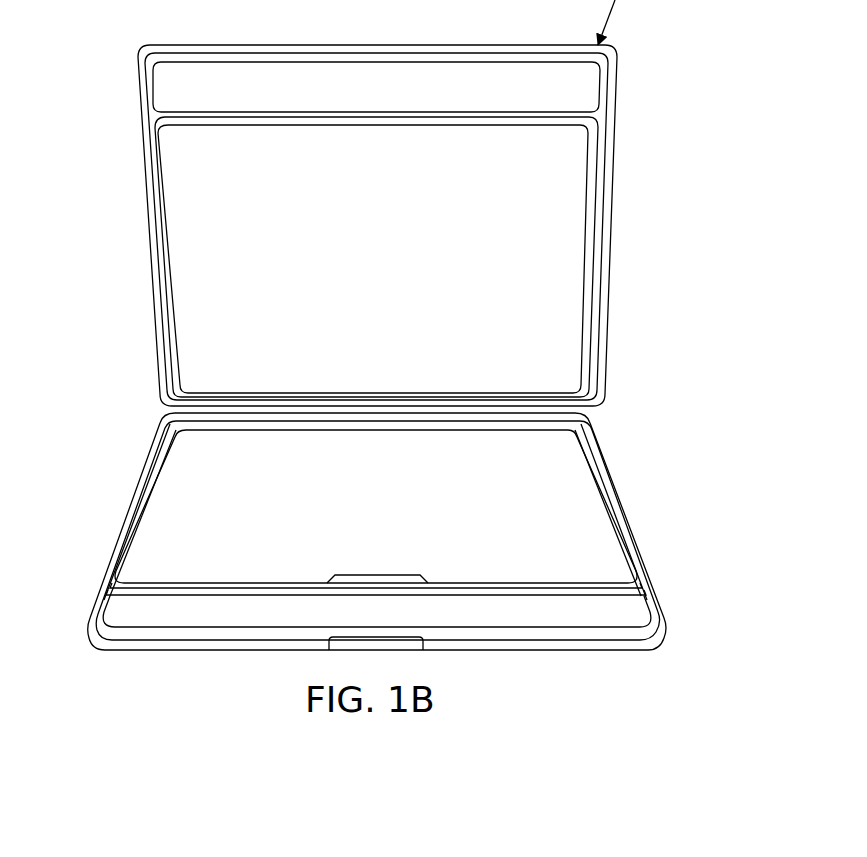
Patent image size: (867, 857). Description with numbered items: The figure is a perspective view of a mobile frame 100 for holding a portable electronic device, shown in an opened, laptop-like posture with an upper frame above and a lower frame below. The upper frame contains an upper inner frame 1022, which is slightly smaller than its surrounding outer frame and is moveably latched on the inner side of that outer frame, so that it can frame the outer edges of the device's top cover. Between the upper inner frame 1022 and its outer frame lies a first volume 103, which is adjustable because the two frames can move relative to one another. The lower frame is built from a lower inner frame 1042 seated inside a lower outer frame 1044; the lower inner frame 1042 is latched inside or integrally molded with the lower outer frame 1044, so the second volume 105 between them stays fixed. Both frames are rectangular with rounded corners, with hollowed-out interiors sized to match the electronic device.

The mobile frame 100 is at (105, 46).
The first volume 103 is at (184, 73).
The upper inner frame 1022 is at (398, 119).
The lower inner frame 1042 is at (612, 516).
The lower outer frame 1044 is at (647, 633).
The second volume 105 is at (129, 612).